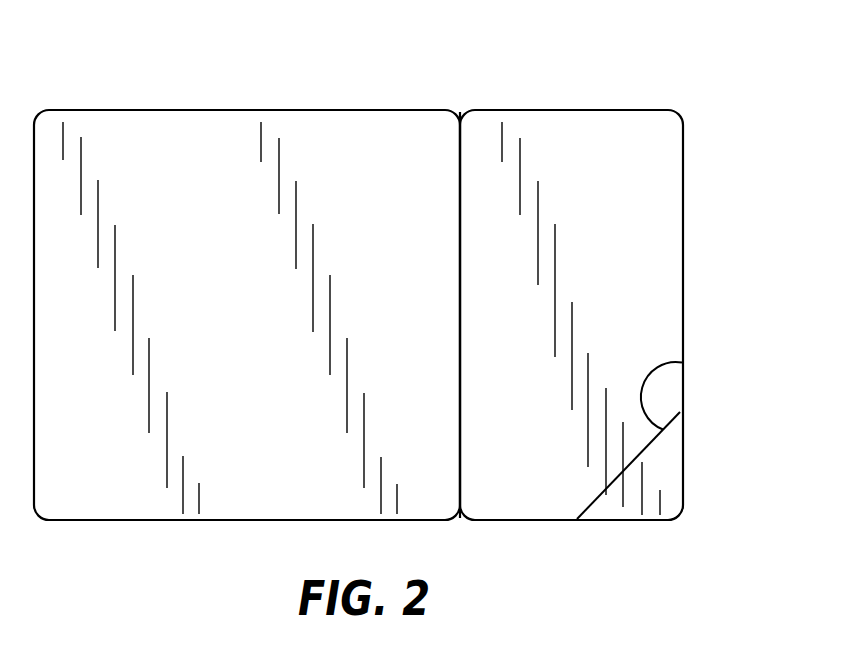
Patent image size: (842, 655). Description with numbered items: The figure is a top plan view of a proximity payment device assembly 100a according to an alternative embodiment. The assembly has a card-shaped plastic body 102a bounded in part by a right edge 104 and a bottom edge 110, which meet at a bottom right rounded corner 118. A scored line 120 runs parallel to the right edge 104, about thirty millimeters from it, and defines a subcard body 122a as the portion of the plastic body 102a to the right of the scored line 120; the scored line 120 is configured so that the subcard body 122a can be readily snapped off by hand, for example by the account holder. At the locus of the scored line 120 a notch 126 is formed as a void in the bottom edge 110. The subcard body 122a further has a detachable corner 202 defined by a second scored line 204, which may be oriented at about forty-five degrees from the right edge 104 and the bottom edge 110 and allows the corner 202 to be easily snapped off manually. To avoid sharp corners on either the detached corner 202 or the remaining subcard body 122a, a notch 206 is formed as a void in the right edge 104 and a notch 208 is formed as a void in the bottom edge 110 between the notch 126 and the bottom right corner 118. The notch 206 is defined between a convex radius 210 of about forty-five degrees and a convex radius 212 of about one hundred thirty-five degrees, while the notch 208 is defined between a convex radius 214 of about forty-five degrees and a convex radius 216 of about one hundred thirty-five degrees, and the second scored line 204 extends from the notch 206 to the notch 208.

The proximity payment device assembly 100a is at (666, 55).
The plastic body 102a is at (130, 106).
The right edge 104 is at (683, 313).
The bottom edge 110 is at (272, 521).
The bottom right rounded corner 118 is at (679, 521).
The scored line 120 is at (459, 178).
The subcard body 122a is at (657, 244).
The notch 126 is at (458, 530).
The detachable corner 202 is at (665, 477).
The second scored line 204 is at (683, 362).
The notch 206 is at (696, 413).
The notch 208 is at (575, 530).
The convex radius 210 is at (683, 402).
The convex radius 212 is at (683, 418).
The convex radius 214 is at (577, 519).
The convex radius 216 is at (583, 520).